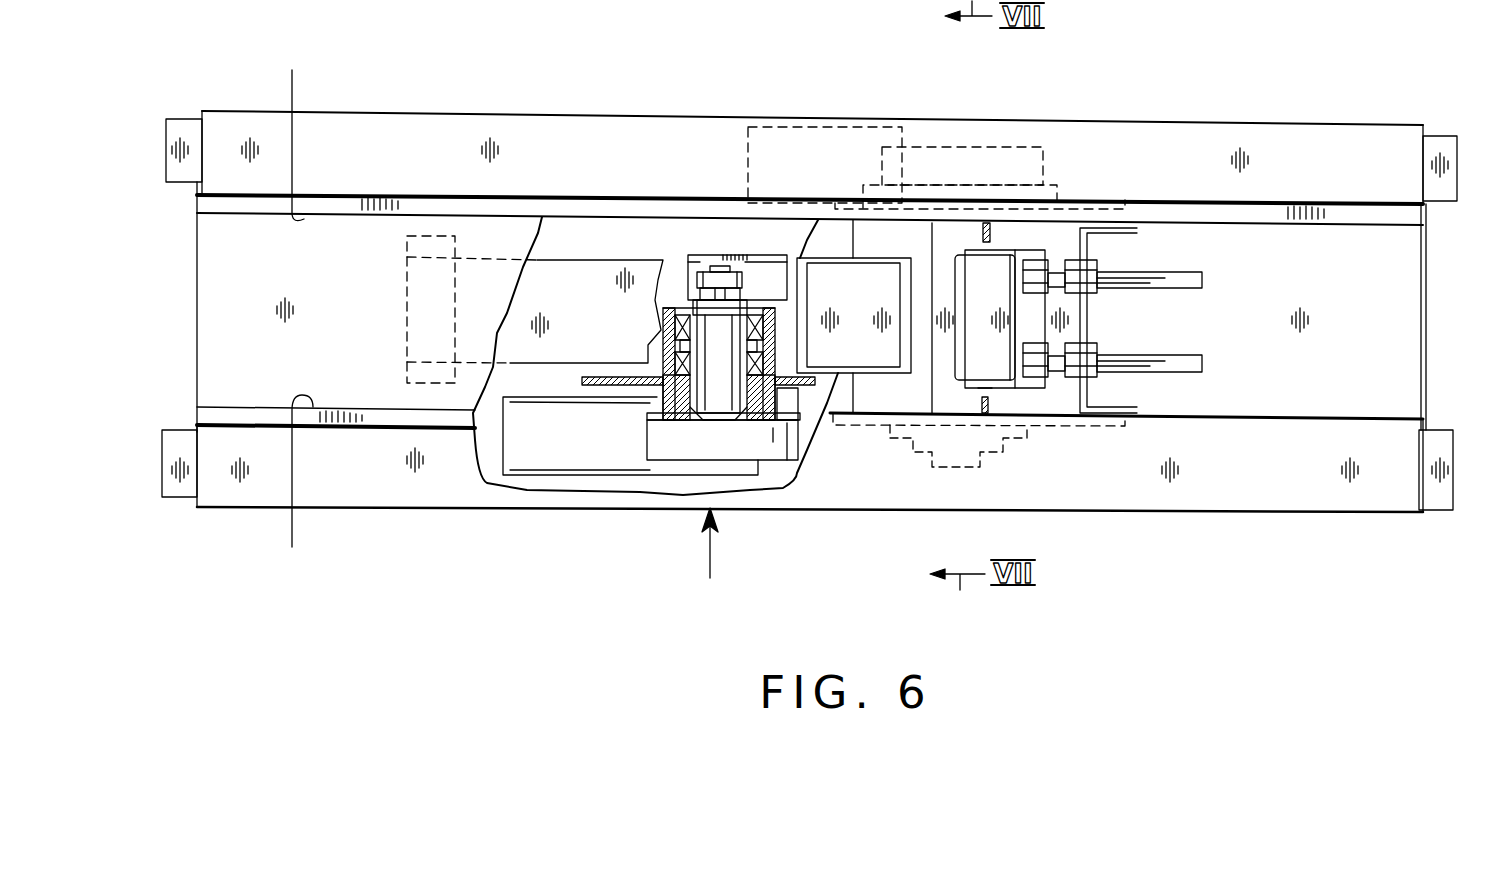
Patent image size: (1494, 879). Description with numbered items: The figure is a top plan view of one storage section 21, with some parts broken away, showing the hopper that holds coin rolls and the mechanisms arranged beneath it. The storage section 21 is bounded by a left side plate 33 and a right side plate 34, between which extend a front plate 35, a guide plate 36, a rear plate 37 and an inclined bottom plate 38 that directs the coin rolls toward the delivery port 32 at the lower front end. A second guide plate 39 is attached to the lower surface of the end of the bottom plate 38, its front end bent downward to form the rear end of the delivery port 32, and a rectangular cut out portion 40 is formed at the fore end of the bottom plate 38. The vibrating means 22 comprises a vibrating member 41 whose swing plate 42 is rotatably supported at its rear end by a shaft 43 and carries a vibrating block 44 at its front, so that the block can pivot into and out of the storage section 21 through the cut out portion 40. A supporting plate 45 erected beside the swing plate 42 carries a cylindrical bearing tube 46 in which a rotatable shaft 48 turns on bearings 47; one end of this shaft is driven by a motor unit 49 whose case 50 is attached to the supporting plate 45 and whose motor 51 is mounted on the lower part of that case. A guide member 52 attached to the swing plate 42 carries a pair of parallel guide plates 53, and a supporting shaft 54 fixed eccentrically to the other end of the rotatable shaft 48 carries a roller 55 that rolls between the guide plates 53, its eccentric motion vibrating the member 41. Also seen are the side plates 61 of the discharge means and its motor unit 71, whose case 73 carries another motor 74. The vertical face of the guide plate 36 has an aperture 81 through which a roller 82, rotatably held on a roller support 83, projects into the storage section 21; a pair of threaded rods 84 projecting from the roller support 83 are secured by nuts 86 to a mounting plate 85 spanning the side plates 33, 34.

The storage section 21 is at (347, 230).
The vibrating means 22 is at (697, 621).
The delivery port 32 is at (940, 407).
The side plate 33 is at (295, 488).
The side plate 34 is at (292, 129).
The front plate 35 is at (1427, 307).
The guide plate 36 is at (988, 392).
The rear plate 37 is at (200, 297).
The bottom plate 38 is at (242, 330).
The guide plate 39 is at (907, 402).
The cut out portion 40 is at (873, 377).
The vibrating member 41 is at (551, 232).
The swing plate 42 is at (583, 268).
The shaft 43 is at (440, 236).
The vibrating block 44 is at (875, 290).
The supporting plate 45 is at (592, 385).
The bearing tube 46 is at (658, 373).
The bearings 47 is at (675, 360).
The rotatable shaft 48 is at (723, 397).
The motor unit 49 is at (619, 478).
The case 50 is at (785, 460).
The motor 51 is at (527, 480).
The guide member 52 is at (773, 255).
The guide plates 53 is at (751, 257).
The supporting shaft 54 is at (717, 256).
The roller 55 is at (700, 276).
The side plates 61 is at (1103, 205).
The motor unit 71 is at (882, 127).
The case 73 is at (937, 147).
The motor 74 is at (784, 127).
The aperture 81 is at (985, 395).
The roller 82 is at (978, 263).
The roller support 83 is at (1012, 255).
The threaded rods 84 is at (1185, 290).
The mounting plate 85 is at (1085, 245).
The nuts 86 is at (1093, 295).